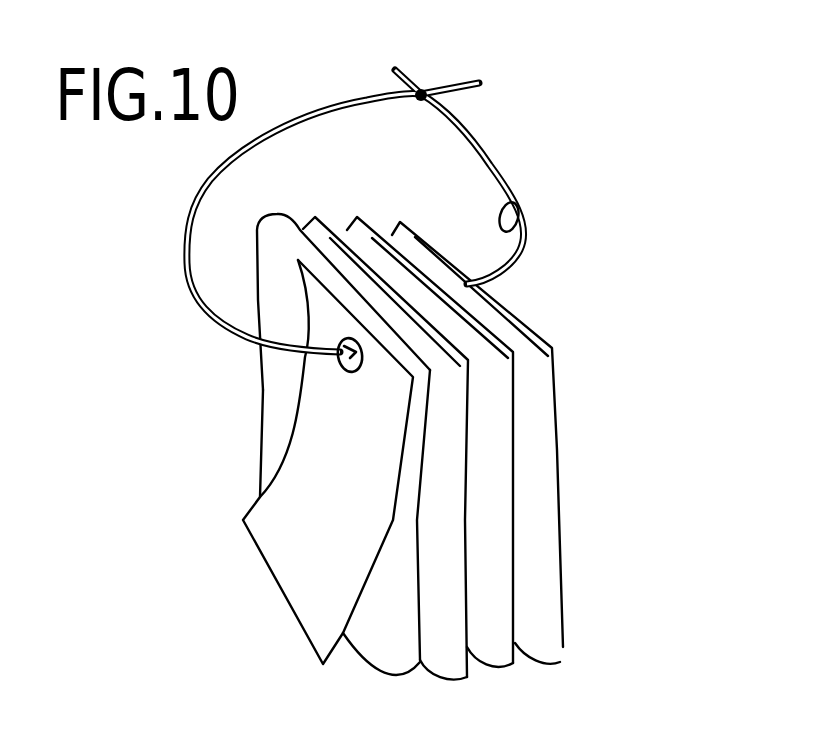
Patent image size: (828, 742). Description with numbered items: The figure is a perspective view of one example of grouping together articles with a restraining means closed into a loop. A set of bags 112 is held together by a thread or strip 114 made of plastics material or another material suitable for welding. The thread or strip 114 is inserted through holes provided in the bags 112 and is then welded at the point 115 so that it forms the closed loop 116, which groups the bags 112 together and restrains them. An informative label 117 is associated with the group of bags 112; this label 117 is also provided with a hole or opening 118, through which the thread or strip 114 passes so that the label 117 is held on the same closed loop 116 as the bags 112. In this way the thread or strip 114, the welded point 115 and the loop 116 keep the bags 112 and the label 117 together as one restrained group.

The bags 112 is at (500, 622).
The thread or strip 114 is at (190, 200).
The point 115 is at (421, 101).
The closed loop 116 is at (520, 236).
The informative label 117 is at (267, 537).
The hole or opening 118 is at (343, 357).